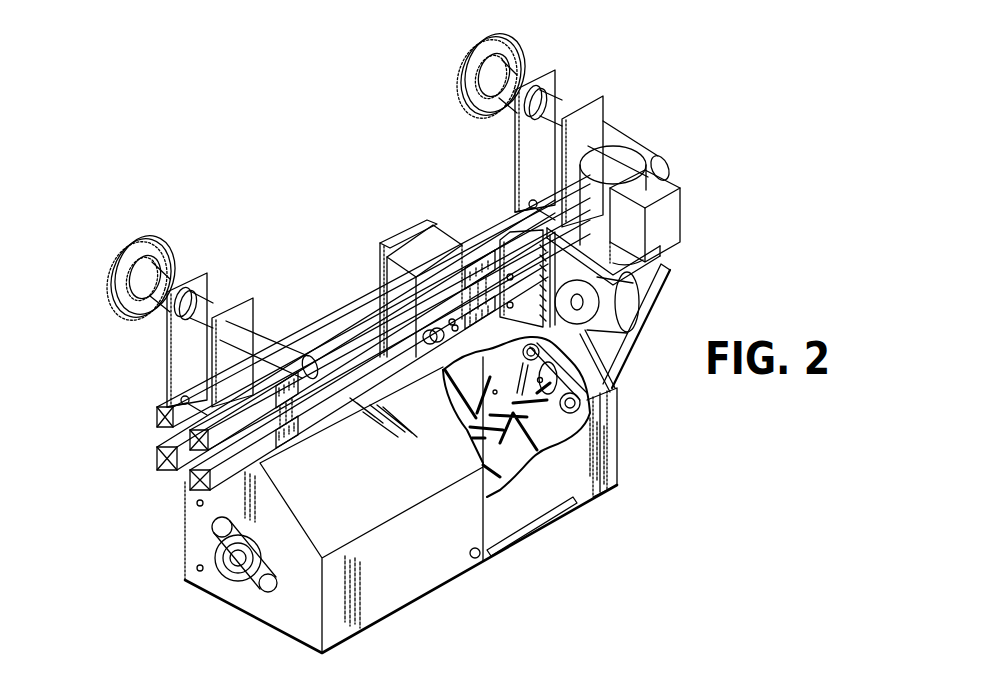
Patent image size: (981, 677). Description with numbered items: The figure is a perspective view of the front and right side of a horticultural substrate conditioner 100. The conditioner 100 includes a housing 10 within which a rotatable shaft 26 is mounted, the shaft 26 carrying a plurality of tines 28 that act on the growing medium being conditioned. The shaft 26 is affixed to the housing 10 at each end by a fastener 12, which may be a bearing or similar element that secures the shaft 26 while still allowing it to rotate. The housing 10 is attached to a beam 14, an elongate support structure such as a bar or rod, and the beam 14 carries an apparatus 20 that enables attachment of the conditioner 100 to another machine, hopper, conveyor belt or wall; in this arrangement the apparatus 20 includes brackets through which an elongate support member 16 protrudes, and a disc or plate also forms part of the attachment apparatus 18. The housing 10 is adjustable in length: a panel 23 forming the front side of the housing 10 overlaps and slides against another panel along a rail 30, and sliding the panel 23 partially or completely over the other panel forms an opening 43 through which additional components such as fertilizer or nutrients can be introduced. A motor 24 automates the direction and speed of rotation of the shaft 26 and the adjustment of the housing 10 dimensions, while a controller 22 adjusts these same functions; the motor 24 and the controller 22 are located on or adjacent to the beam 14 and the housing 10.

The horticultural substrate conditioner 100 is at (741, 71).
The housing 10 is at (162, 533).
The fastener 12 is at (228, 567).
The beam 14 is at (340, 302).
The elongate support member 16 is at (178, 282).
The spool 18 is at (118, 262).
The apparatus 20 is at (603, 107).
The controller 22 is at (393, 258).
The panel 23 is at (410, 578).
The motor 24 is at (680, 224).
The shaft 26 is at (572, 402).
The tines 28 is at (525, 460).
The rail 30 is at (535, 527).
The opening 43 is at (592, 496).